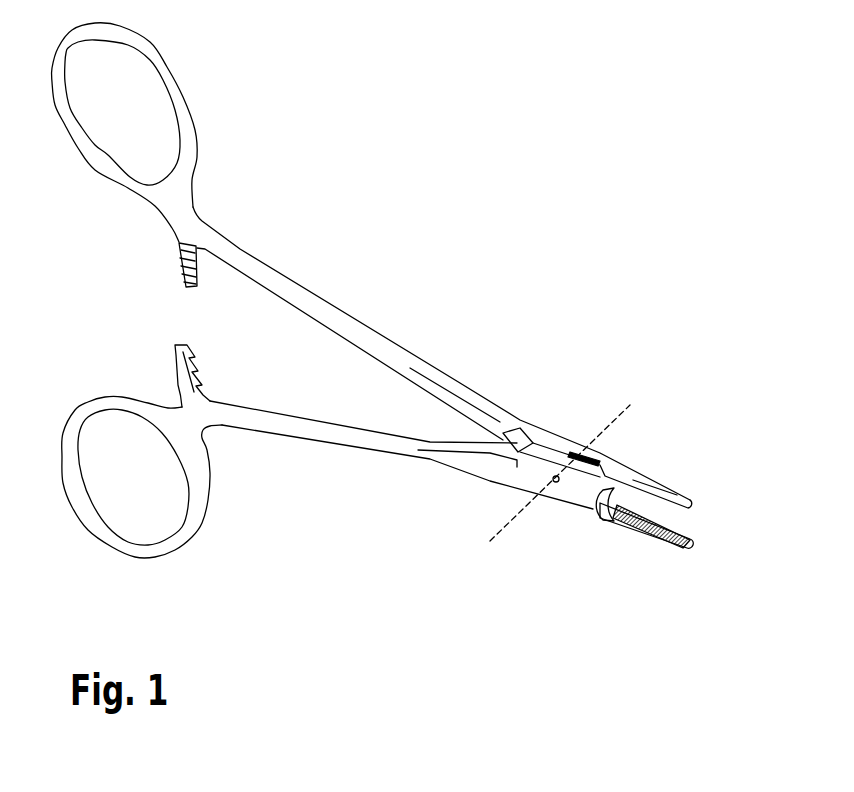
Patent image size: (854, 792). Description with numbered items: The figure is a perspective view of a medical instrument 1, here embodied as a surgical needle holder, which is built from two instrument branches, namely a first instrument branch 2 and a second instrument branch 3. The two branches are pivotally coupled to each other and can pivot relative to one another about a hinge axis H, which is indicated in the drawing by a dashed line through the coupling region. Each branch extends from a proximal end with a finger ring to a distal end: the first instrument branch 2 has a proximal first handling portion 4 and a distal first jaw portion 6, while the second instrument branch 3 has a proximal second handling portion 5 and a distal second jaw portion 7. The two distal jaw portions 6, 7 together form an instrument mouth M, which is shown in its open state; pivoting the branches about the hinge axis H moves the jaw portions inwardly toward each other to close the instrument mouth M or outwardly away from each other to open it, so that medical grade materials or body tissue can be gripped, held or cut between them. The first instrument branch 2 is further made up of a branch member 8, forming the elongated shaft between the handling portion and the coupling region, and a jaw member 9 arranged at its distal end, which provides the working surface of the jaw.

The medical instrument 1 is at (458, 156).
The first instrument branch 2 is at (302, 472).
The second instrument branch 3 is at (393, 310).
The first handling portion 4 is at (95, 370).
The second handling portion 5 is at (84, 190).
The first jaw portion 6 is at (697, 482).
The second jaw portion 7 is at (659, 562).
The branch member 8 is at (360, 448).
The jaw member 9 is at (652, 468).
The hinge axis H is at (617, 416).
The instrument mouth M is at (680, 517).